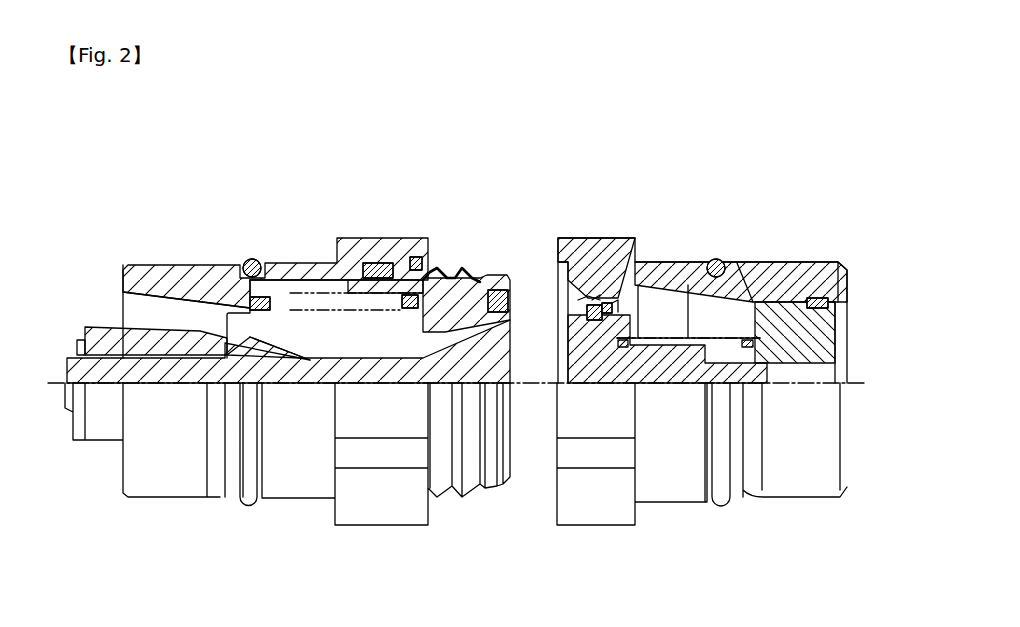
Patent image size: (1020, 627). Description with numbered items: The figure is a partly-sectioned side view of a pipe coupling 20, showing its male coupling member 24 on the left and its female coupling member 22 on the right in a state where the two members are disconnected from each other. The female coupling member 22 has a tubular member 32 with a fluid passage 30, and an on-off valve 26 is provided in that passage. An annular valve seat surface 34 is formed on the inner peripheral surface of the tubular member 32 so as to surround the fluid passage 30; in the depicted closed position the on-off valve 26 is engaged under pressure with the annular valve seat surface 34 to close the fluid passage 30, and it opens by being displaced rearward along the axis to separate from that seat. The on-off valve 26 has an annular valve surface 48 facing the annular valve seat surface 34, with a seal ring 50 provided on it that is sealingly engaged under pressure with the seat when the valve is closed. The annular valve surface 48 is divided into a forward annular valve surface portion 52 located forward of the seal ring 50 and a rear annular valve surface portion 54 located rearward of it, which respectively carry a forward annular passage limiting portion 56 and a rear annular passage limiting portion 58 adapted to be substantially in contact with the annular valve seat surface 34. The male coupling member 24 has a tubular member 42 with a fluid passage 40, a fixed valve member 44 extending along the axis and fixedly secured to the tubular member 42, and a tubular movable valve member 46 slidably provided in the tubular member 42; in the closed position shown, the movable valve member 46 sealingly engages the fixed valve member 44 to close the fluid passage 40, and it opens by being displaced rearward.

The pipe coupling 20 is at (520, 158).
The female coupling member 22 is at (726, 188).
The male coupling member 24 is at (332, 190).
The on-off valve 26 is at (632, 307).
The fluid passage 30 is at (738, 307).
The tubular member 32 is at (683, 261).
The annular valve seat surface 34 is at (620, 312).
The fluid passage 40 is at (303, 327).
The tubular member 42 is at (215, 277).
The fixed valve member 44 is at (407, 358).
The movable valve member 46 is at (460, 267).
The annular valve surface 48 is at (592, 300).
The seal ring 50 is at (578, 343).
The forward annular valve surface portion 52 is at (578, 303).
The rear annular valve surface portion 54 is at (598, 306).
The forward annular passage limiting portion 56 is at (583, 308).
The rear annular passage limiting portion 58 is at (618, 298).